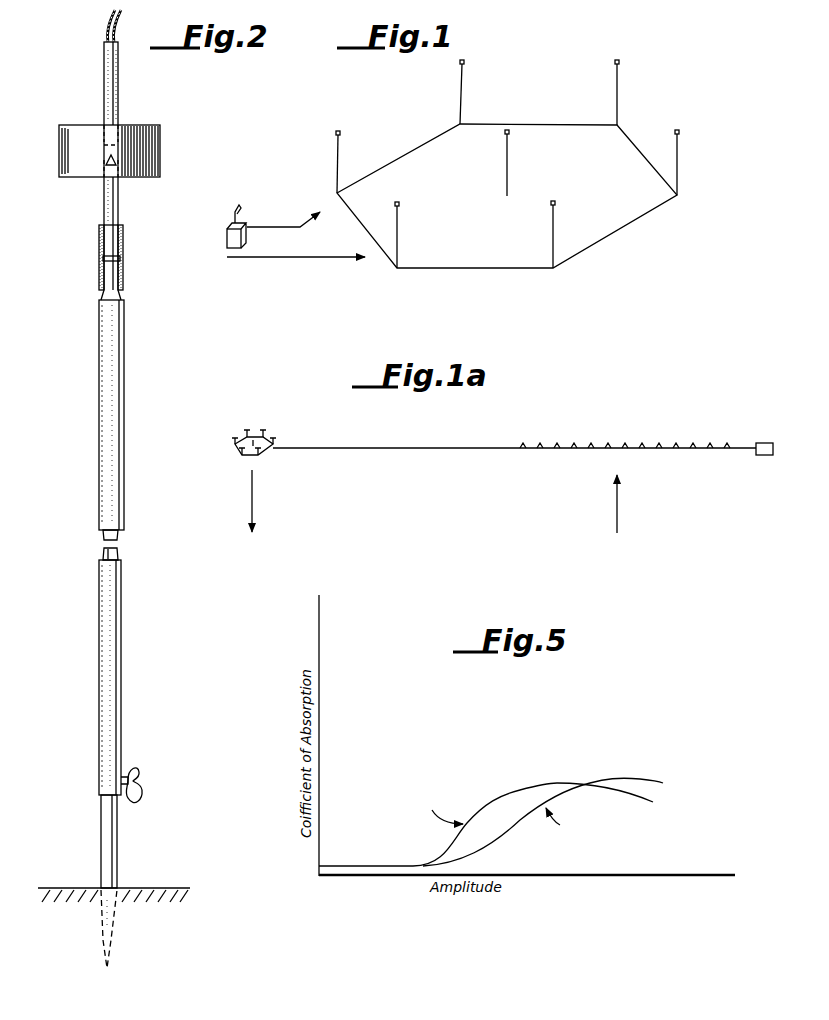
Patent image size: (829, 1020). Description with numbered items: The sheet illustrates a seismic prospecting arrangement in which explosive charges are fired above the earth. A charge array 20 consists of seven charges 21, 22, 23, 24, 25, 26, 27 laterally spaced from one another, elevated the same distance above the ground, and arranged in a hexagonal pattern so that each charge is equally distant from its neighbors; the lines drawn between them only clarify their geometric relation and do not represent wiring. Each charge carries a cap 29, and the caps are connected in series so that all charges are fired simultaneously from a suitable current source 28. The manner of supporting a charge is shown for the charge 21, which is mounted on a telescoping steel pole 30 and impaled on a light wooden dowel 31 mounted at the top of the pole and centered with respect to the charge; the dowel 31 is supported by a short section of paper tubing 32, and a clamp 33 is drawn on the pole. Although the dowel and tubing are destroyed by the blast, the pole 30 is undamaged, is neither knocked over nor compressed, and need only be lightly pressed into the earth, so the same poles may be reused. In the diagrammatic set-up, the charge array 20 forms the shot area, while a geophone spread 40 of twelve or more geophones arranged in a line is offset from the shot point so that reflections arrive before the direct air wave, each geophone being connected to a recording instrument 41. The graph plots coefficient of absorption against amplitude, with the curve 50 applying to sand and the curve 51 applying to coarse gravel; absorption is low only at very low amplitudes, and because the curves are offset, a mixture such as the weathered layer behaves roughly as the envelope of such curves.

In FIG. 1, the charge array 20 is at (372, 282).
In FIG. 1A, the charge array 20 is at (232, 451).
In FIG. 2, the charge 21 is at (153, 125).
In FIG. 1, the charge 21 is at (334, 133).
In FIG. 1, the charge 22 is at (401, 204).
In FIG. 1, the charge 23 is at (511, 133).
In FIG. 1, the charge 24 is at (557, 203).
In FIG. 1, the charge 25 is at (681, 132).
In FIG. 1, the charge 26 is at (620, 62).
In FIG. 1, the charge 27 is at (459, 63).
In FIG. 1, the current source 28 is at (227, 238).
In FIG. 2, the cap 29 is at (104, 77).
In FIG. 2, the telescoping steel pole 30 is at (124, 374).
In FIG. 2, the wooden dowel 31 is at (120, 202).
In FIG. 2, the paper tubing 32 is at (112, 78).
In FIG. 2, the clamp 33 is at (123, 267).
In FIG. 1A, the geophone spread 40 is at (600, 436).
In FIG. 1A, the recording instrument 41 is at (764, 443).
In FIG. 5, the absorption curve for sand 50 is at (510, 795).
In FIG. 5, the absorption curve for coarse gravel 51 is at (510, 830).